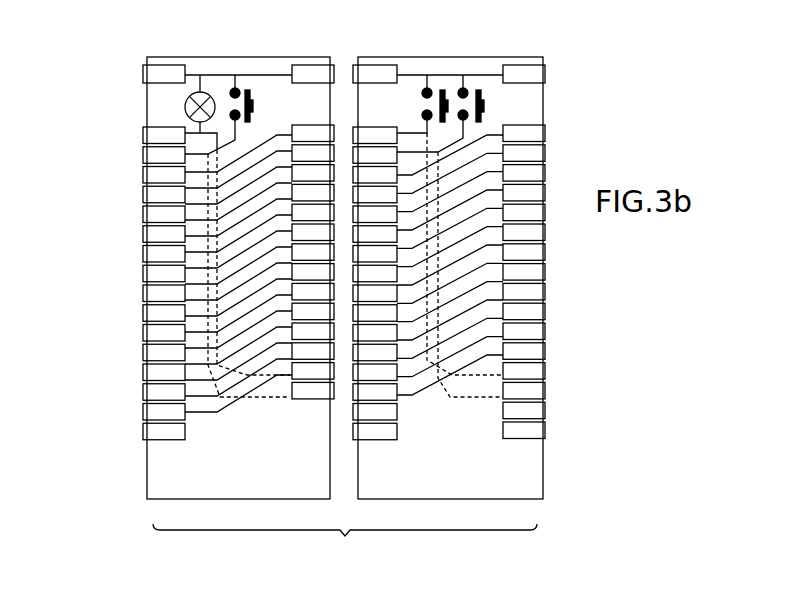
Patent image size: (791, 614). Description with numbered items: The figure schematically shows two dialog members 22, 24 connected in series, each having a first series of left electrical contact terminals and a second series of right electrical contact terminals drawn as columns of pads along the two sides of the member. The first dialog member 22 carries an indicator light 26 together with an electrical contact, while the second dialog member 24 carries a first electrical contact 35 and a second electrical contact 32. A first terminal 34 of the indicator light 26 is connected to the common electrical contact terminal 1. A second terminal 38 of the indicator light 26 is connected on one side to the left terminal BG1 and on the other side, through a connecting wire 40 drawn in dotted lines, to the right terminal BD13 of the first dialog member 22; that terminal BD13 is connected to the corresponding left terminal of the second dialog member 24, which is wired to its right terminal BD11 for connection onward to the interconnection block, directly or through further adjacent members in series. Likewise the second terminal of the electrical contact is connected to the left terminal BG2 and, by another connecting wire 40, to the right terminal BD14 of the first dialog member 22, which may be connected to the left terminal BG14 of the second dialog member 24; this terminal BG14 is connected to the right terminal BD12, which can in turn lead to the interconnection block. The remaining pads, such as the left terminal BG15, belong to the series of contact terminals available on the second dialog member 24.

The common electrical contact terminal 1 is at (518, 73).
The first dialog member 22 is at (270, 512).
The second dialog member 24 is at (413, 512).
The indicator light 26 is at (184, 108).
The second electrical contact 32 is at (483, 103).
The first terminal of the indicator light 34 is at (148, 88).
The first electrical contact 35 is at (428, 105).
The second terminal of the indicator light 38 is at (195, 130).
The connecting wire 40 is at (208, 276).
The left terminal BG1 is at (155, 135).
The left terminal BG2 is at (155, 153).
The right terminal BD11 is at (528, 333).
The right terminal BD12 is at (528, 352).
The right terminal BD13 is at (310, 373).
The right terminal BD14 is at (310, 395).
The left terminal BG14 is at (383, 395).
The left terminal BG15 is at (383, 413).